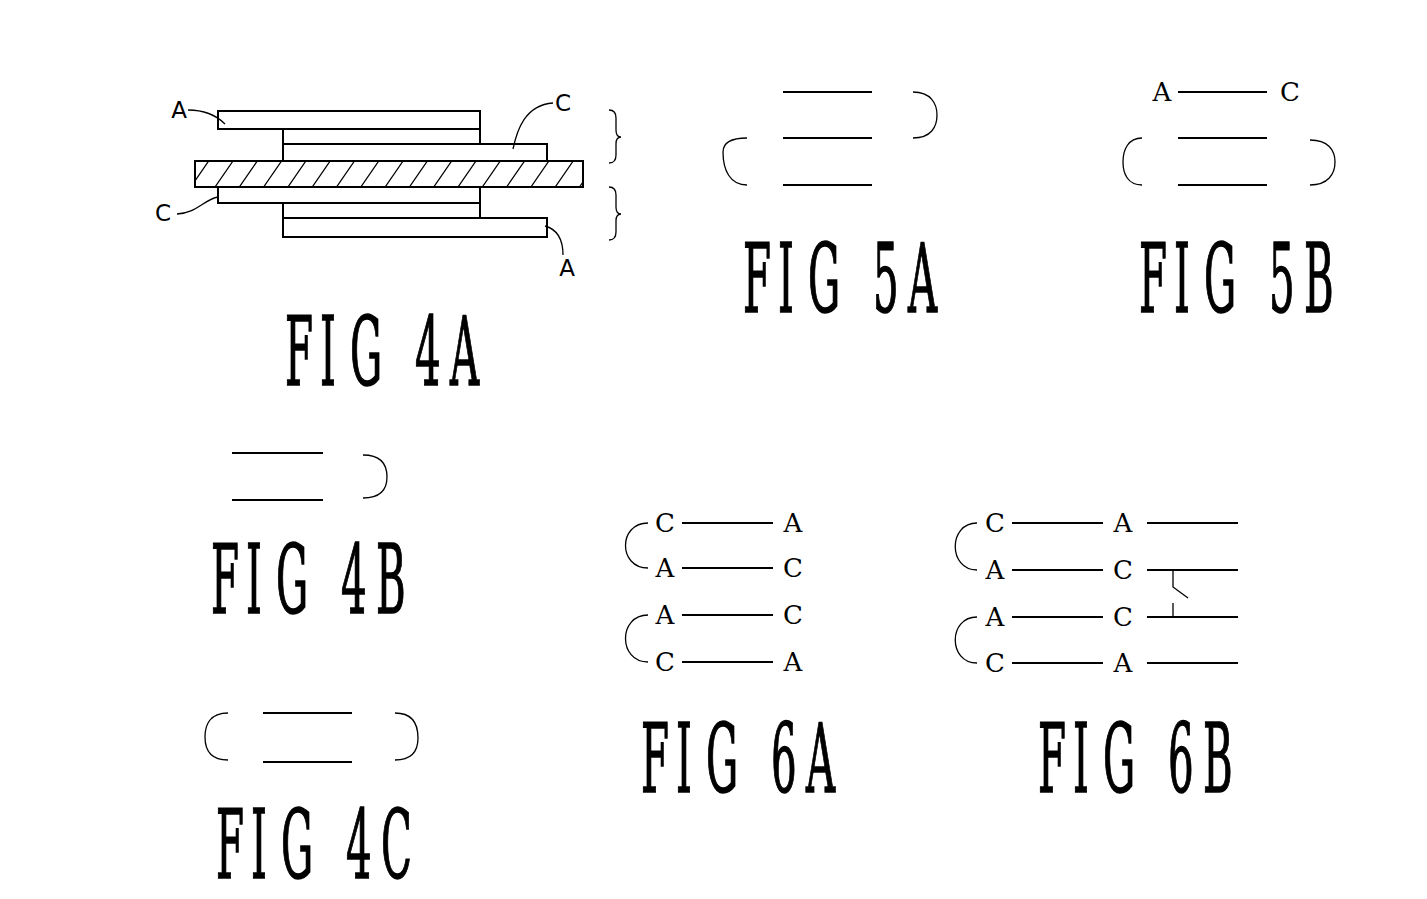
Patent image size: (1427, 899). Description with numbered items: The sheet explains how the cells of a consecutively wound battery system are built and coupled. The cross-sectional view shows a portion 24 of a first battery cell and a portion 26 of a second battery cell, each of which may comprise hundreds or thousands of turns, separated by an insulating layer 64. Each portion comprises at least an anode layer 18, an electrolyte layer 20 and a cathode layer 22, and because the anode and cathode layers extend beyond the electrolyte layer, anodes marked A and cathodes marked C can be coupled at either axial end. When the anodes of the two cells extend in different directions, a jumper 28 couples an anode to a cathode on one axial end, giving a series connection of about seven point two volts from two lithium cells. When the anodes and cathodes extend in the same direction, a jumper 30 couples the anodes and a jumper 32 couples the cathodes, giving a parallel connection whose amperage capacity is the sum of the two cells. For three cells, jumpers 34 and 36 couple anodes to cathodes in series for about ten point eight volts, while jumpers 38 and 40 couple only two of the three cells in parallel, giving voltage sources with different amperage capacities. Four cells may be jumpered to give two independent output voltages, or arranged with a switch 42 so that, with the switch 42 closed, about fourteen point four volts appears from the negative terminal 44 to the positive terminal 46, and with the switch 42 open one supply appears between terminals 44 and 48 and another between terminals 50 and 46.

In FIG. 4A, the anode layer 18 is at (255, 122).
In FIG. 4A, the electrolyte layer 20 is at (477, 138).
In FIG. 4A, the cathode layer 22 is at (398, 150).
In FIG. 4A, the portion 24 is at (628, 136).
In FIG. 4A, the portion 26 is at (628, 213).
In FIG. 4A, the insulating layer 64 is at (208, 176).
In FIG. 4B, the jumper 28 is at (387, 477).
In FIG. 4C, the jumper 30 is at (205, 737).
In FIG. 4C, the jumper 32 is at (418, 738).
In FIG. 5A, the jumper 34 is at (937, 115).
In FIG. 5A, the jumper 36 is at (723, 152).
In FIG. 5B, the jumper 38 is at (1123, 162).
In FIG. 5B, the jumper 40 is at (1335, 162).
In FIG. 6B, the switch 42 is at (1196, 580).
In FIG. 6B, the negative terminal 44 is at (1290, 667).
In FIG. 6B, the positive terminal 46 is at (1290, 523).
In FIG. 6B, the terminal 48 is at (1317, 620).
In FIG. 6B, the terminal 50 is at (1317, 568).